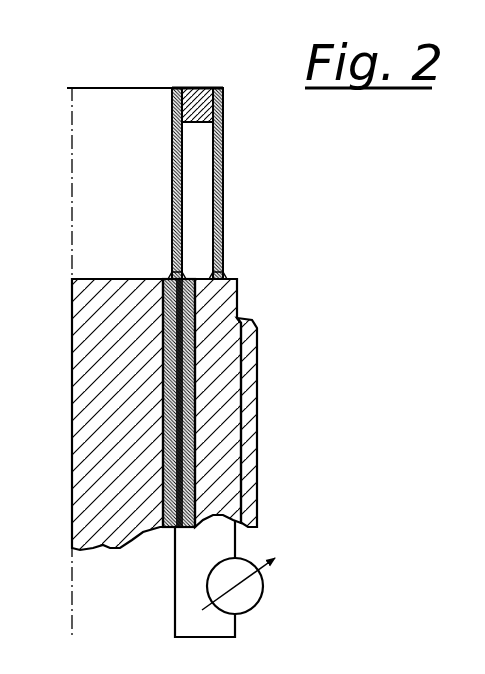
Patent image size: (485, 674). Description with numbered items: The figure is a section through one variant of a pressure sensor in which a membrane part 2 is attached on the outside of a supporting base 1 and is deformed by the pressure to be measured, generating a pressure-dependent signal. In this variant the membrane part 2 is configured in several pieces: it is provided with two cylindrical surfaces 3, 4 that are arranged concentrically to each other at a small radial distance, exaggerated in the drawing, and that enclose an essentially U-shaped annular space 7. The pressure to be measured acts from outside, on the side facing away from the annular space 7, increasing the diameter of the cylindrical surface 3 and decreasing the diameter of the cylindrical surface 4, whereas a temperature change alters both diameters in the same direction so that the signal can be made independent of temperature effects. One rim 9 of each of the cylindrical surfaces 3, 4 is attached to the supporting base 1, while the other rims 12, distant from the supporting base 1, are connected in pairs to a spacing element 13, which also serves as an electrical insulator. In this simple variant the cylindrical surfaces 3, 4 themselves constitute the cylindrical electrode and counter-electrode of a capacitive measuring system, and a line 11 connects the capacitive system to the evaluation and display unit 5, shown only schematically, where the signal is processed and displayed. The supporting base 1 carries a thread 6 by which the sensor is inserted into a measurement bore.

The supporting base 1 is at (88, 363).
The membrane part 2 is at (210, 146).
The cylindrical surface 3 is at (175, 147).
The cylindrical surface 4 is at (223, 162).
The evaluation and display unit 5 is at (248, 590).
The thread 6 is at (247, 383).
The annular space 7 is at (200, 195).
The rim 9 is at (175, 278).
The line 11 is at (180, 485).
The rim 12 is at (177, 88).
The spacing element 13 is at (200, 98).